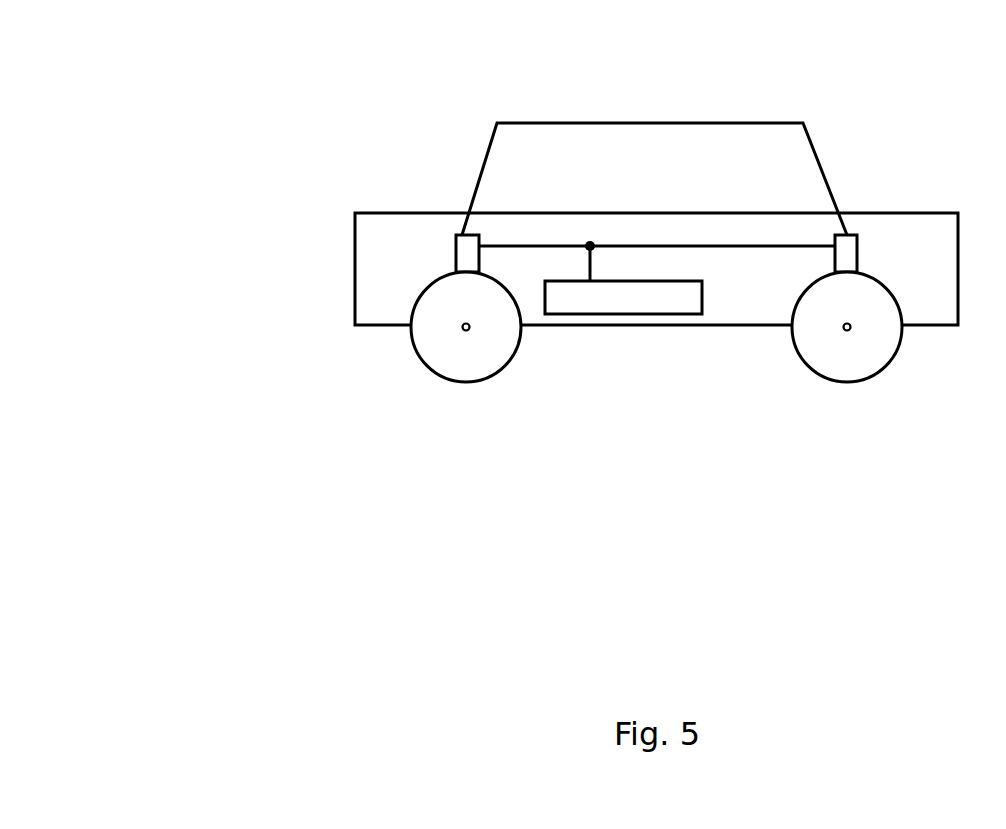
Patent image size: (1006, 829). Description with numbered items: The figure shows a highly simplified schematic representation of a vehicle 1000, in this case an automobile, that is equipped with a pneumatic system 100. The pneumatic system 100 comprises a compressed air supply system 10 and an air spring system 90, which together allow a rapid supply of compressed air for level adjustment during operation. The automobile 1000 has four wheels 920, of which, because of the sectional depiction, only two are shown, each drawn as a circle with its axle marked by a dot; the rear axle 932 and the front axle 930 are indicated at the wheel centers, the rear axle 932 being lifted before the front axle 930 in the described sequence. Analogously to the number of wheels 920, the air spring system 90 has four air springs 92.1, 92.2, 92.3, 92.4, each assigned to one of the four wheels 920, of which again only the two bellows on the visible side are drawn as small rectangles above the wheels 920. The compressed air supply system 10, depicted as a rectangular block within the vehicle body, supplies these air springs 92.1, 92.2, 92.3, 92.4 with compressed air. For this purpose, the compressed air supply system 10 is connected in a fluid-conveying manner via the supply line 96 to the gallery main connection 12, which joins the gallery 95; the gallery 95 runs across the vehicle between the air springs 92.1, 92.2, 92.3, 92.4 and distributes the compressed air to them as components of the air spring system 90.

The vehicle 1000 is at (813, 61).
The pneumatic system 100 is at (553, 123).
The compressed air supply system 10 is at (552, 307).
The gallery main connection 12 is at (590, 243).
The gallery 95 is at (780, 246).
The supply line 96 is at (590, 271).
The air spring system 90 is at (388, 302).
The air spring 92.1 is at (890, 199).
The air spring 92.2 is at (847, 225).
The air spring 92.3 is at (413, 199).
The air spring 92.4 is at (465, 225).
The wheel 920 is at (548, 386).
The front axle 930 is at (812, 326).
The rear axle 932 is at (436, 327).